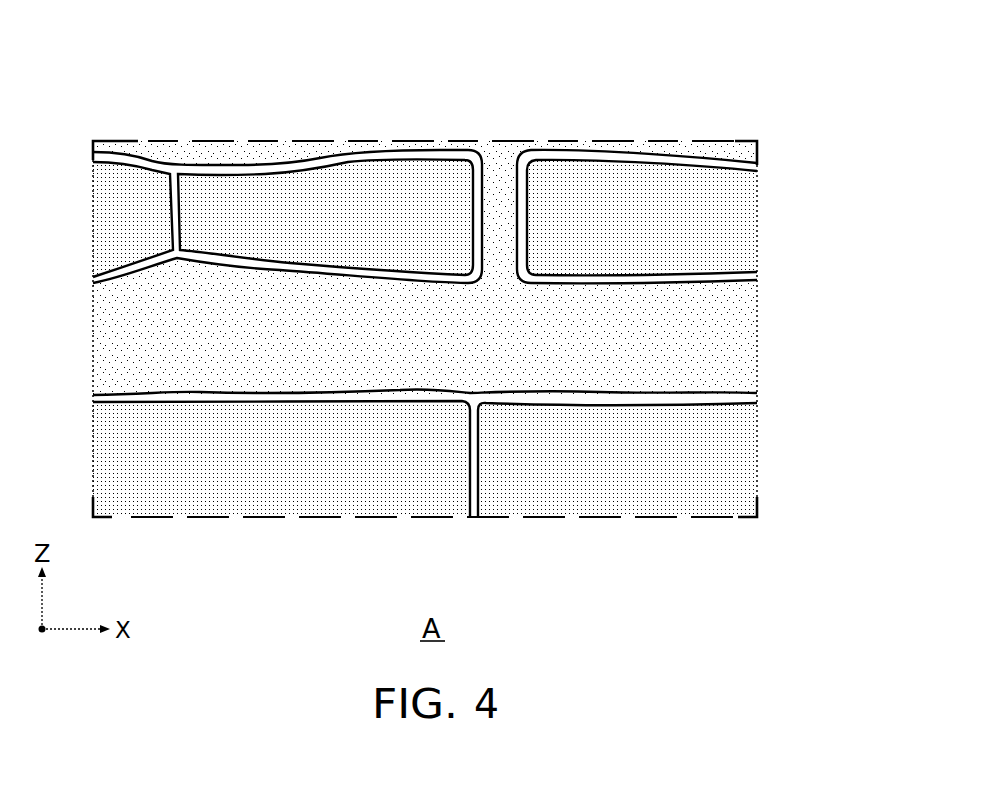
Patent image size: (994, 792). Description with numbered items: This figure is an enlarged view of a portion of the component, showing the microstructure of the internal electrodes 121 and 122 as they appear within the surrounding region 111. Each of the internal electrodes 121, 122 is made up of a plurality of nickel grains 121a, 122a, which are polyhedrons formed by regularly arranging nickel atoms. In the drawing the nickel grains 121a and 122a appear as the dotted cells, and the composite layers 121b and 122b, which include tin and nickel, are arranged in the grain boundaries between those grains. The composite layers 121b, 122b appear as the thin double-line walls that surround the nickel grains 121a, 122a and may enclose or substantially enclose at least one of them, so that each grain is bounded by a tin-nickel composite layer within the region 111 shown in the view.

The substrate / insulating region 111 is at (740, 348).
The internal electrode 121 is at (425, 161).
The nickel grain 121a is at (343, 212).
The composite layer including tin and nickel 121b is at (177, 210).
The internal electrode 122 is at (425, 499).
The nickel grain 122a is at (317, 473).
The composite layer including tin and nickel 122b is at (407, 395).